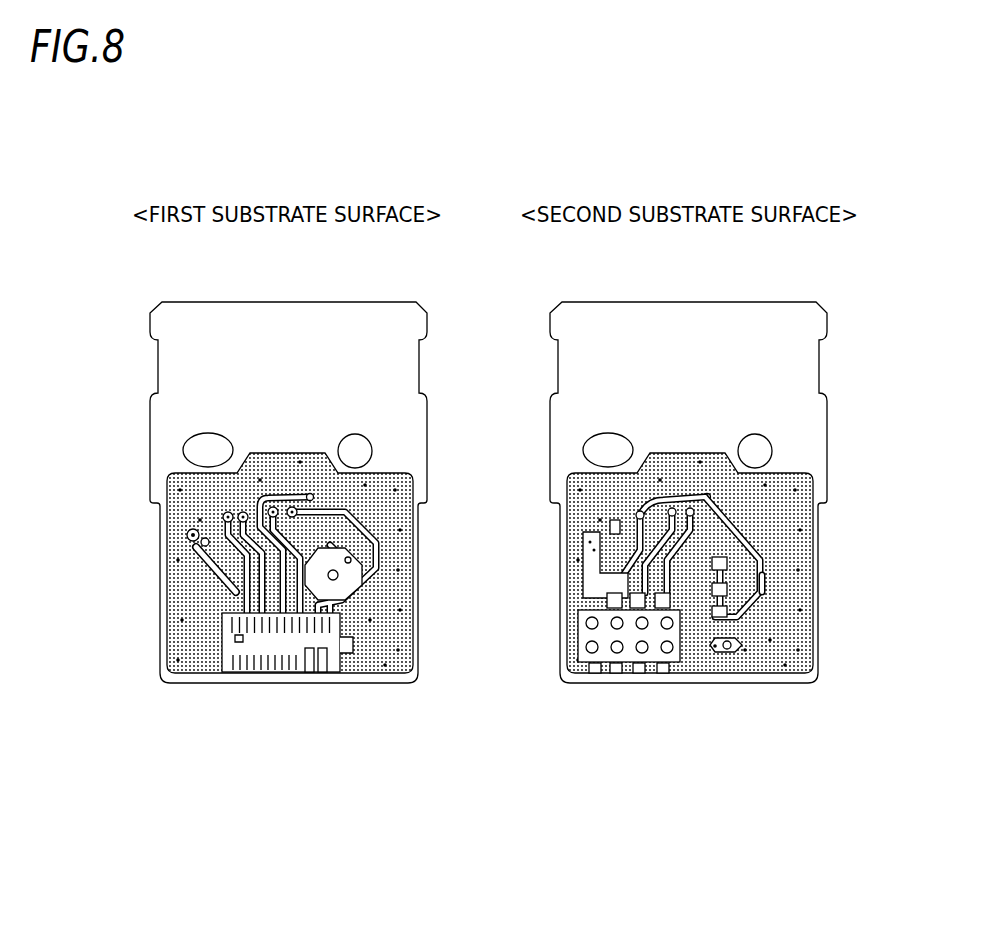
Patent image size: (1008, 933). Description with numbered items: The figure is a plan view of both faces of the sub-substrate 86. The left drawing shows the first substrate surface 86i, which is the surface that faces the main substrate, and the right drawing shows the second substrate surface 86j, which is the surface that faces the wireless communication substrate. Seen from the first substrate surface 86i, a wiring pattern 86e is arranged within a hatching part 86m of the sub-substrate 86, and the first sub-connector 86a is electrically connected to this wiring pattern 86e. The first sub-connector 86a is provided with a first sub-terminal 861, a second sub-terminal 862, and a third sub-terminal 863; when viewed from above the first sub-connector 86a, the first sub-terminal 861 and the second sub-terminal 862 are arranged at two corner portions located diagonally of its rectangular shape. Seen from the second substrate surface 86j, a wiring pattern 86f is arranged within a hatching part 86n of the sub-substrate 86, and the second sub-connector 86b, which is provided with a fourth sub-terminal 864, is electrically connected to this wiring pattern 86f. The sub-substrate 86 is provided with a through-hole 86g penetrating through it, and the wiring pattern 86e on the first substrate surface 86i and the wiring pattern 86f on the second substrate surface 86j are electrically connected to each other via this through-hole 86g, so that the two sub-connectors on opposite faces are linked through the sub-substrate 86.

The sub-substrate 86 is at (151, 299).
The first substrate surface 86i is at (193, 397).
The second substrate surface 86j is at (795, 436).
The through-hole 86g is at (311, 493).
The wiring pattern 86e is at (212, 586).
The wiring pattern 86f is at (768, 598).
The hatching part 86m is at (370, 673).
The hatching part 86n is at (770, 674).
The first sub-connector 86a is at (275, 642).
The second sub-connector 86b is at (628, 660).
The first sub-terminal 861 is at (320, 662).
The second sub-terminal 862 is at (226, 665).
The third sub-terminal 863 is at (311, 672).
The fourth sub-terminal 864 is at (673, 652).